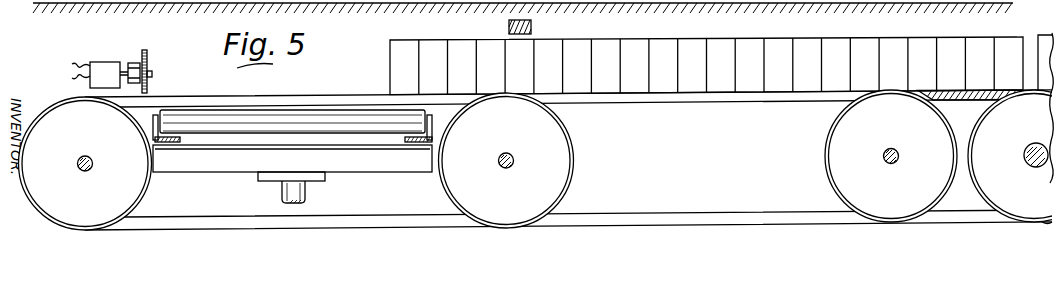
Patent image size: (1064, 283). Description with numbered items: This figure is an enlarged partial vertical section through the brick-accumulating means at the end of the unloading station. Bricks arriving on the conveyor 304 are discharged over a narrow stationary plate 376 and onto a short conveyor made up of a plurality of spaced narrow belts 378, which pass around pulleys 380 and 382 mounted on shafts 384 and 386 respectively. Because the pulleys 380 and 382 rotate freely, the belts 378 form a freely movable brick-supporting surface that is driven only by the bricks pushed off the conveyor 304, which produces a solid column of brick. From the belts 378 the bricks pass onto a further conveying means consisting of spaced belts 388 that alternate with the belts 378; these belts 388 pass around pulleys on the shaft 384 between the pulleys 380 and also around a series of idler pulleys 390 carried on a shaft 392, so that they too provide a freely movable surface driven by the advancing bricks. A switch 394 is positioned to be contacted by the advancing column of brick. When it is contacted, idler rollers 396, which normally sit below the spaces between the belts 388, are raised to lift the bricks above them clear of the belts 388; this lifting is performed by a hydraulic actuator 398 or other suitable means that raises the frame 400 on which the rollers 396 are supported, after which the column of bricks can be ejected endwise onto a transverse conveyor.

The conveyor 304 is at (1030, 88).
The narrow stationary plate 376 is at (970, 96).
The spaced narrow belts 378 is at (722, 99).
The pulley 380 is at (560, 164).
The pulley 382 is at (838, 172).
The shaft 384 is at (512, 157).
The shaft 386 is at (891, 148).
The spaced belts 388 is at (317, 99).
The idler pulleys 390 is at (37, 193).
The shaft 392 is at (84, 171).
The switch 394 is at (153, 73).
The idler rollers 396 is at (252, 118).
The hydraulic actuator 398 is at (306, 193).
The frame 400 is at (368, 162).